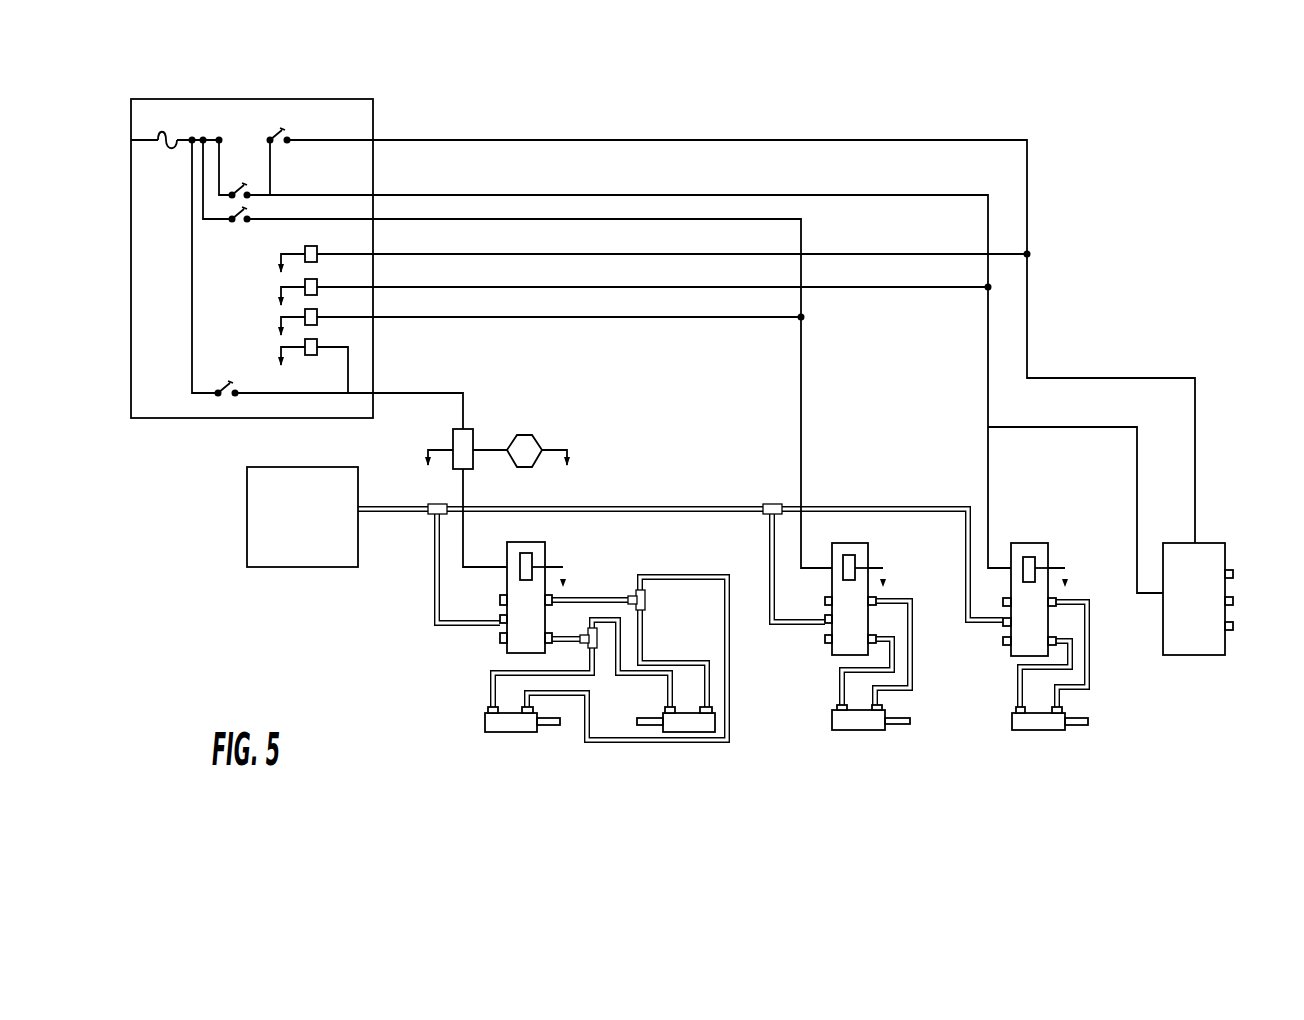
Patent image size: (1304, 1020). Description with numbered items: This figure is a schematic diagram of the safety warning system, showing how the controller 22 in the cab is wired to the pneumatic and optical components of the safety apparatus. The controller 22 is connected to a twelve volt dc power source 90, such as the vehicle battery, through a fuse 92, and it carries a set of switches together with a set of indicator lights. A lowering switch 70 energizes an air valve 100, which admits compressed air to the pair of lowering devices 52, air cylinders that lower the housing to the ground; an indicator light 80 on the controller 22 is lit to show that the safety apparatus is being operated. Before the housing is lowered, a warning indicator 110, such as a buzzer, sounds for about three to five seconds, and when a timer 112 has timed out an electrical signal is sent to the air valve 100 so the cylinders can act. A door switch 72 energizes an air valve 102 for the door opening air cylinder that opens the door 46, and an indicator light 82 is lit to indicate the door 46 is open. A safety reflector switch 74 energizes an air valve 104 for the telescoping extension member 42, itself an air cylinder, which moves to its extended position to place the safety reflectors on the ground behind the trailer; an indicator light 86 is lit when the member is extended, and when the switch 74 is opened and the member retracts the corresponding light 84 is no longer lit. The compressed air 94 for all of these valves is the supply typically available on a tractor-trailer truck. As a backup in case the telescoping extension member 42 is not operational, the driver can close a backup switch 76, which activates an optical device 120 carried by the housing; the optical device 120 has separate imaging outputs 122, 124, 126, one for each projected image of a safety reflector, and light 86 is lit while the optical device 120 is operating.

The controller 22 is at (347, 98).
The 12 volt dc power source 90 is at (103, 108).
The fuse 92 is at (163, 138).
The backup switch 76 is at (290, 139).
The safety reflector switch 74 is at (241, 198).
The door switch 72 is at (232, 222).
The lowering switch 70 is at (221, 397).
The indicator light 86 is at (318, 247).
The indicator light 84 is at (318, 279).
The indicator light 82 is at (318, 309).
The indicator light 80 is at (318, 340).
The timer 112 is at (473, 435).
The warning indicator 110 is at (522, 435).
The compressed air 94 is at (290, 567).
The air valve 100 is at (533, 558).
The air valve 102 is at (853, 559).
The air valve 104 is at (1035, 562).
The lowering devices 52 is at (490, 725).
The door 46 is at (832, 720).
The telescoping extension member 42 is at (1012, 722).
The optical device 120 is at (1223, 550).
The imaging output 122 is at (1233, 575).
The imaging output 124 is at (1233, 601).
The imaging output 126 is at (1233, 627).